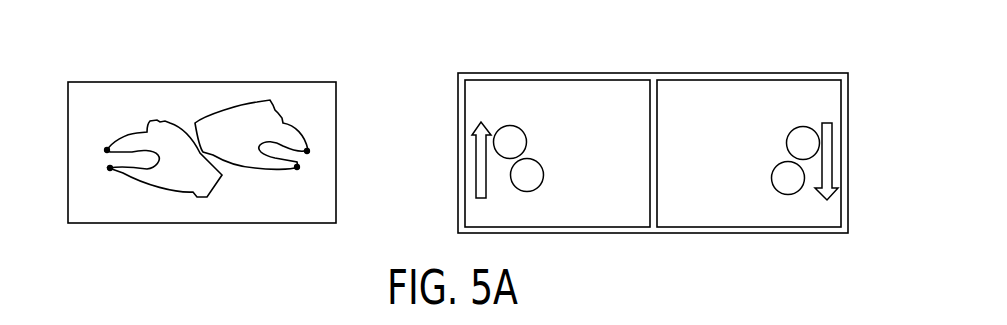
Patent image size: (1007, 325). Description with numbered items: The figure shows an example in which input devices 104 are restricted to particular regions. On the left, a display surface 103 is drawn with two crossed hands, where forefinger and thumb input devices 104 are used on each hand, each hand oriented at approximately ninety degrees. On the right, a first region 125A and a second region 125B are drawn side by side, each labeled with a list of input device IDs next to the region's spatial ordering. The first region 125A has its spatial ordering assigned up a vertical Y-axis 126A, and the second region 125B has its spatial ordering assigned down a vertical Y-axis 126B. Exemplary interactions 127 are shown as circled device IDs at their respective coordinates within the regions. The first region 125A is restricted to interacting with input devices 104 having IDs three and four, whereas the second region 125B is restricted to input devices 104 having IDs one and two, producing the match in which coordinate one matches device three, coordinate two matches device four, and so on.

The display / touch-sensitive surface 103 is at (307, 82).
The input devices 104 is at (107, 150).
The first region 125A is at (613, 92).
The second region 125B is at (713, 92).
The vertical Y-axis 126A is at (480, 127).
The vertical Y-axis 126B is at (825, 168).
The interactions 127 is at (527, 138).